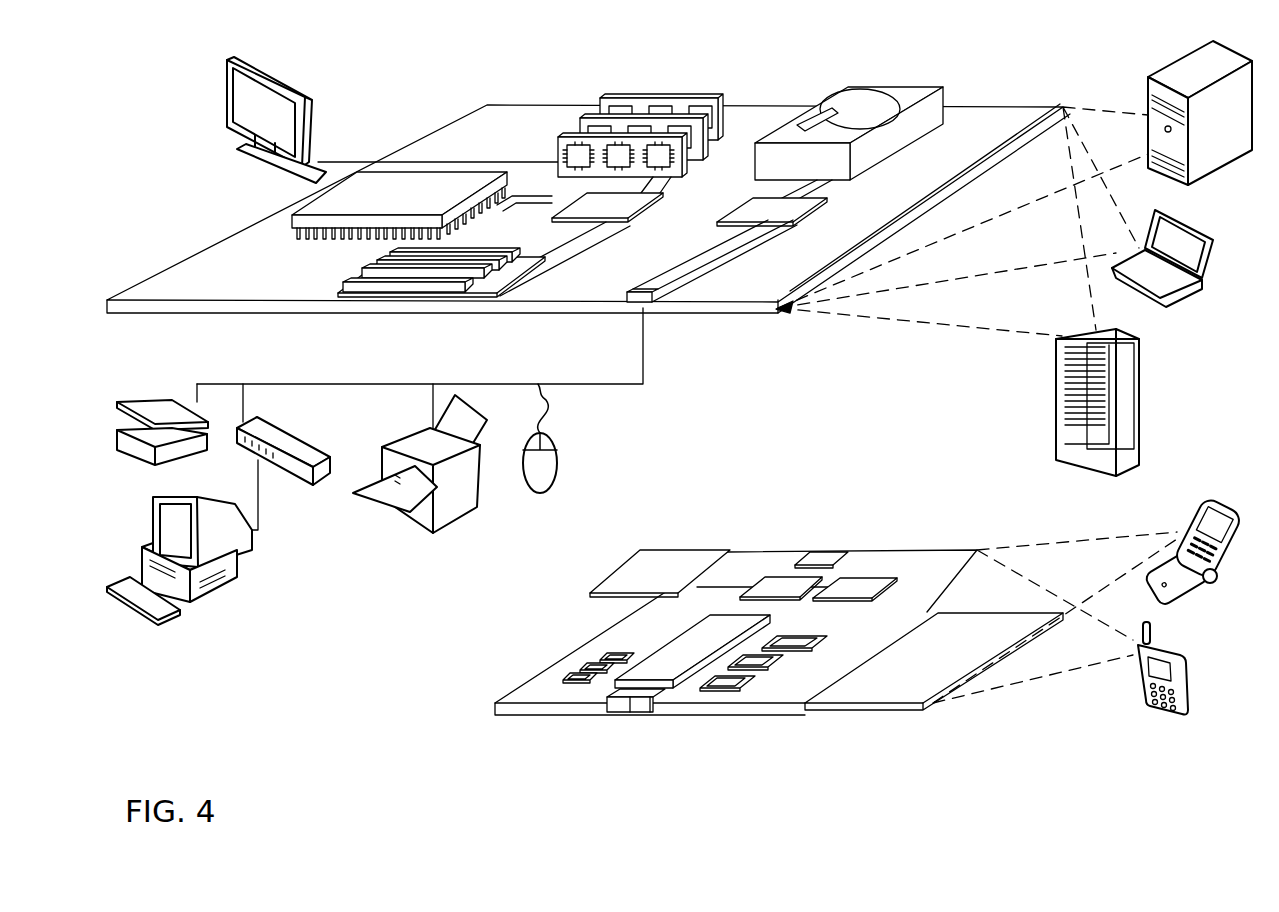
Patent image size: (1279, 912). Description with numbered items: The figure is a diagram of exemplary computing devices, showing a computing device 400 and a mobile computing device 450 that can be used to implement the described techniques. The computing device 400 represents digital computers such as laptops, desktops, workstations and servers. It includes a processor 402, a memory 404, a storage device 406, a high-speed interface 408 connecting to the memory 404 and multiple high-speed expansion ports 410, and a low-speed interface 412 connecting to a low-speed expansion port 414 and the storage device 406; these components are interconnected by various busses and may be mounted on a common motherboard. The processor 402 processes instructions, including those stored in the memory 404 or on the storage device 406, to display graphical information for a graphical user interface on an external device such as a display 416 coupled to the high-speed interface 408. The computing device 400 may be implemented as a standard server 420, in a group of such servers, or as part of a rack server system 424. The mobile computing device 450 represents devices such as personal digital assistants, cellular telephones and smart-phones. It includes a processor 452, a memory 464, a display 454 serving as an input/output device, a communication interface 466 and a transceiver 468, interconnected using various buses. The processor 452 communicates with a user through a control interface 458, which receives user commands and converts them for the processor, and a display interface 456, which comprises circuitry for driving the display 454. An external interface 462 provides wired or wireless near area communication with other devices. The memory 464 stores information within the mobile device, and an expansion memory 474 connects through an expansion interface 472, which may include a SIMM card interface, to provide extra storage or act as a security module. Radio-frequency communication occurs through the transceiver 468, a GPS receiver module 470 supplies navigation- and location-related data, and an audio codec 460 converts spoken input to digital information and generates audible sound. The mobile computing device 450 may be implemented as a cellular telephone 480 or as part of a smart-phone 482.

The computing device 400 is at (417, 79).
The processor 402 is at (297, 222).
The memory 404 is at (612, 100).
The storage device 406 is at (838, 85).
The high-speed interface 408 is at (587, 207).
The high-speed expansion ports 410 is at (368, 275).
The low-speed interface 412 is at (752, 207).
The low-speed expansion port 414 is at (648, 302).
The display 416 is at (228, 54).
The standard server 420 is at (1146, 96).
The rack server system 424 is at (1058, 428).
The mobile computing device 450 is at (473, 710).
The processor 452 is at (665, 675).
The display 454 is at (893, 690).
The display interface 456 is at (730, 682).
The control interface 458 is at (767, 665).
The audio codec 460 is at (788, 642).
The external interface 462 is at (630, 705).
The memory 464 is at (580, 662).
The communication interface 466 is at (780, 590).
The transceiver 468 is at (855, 588).
The GPS receiver module 470 is at (823, 558).
The expansion interface 472 is at (713, 561).
The expansion memory 474 is at (642, 553).
The cellular telephone 480 is at (1193, 512).
The smart-phone 482 is at (1137, 676).